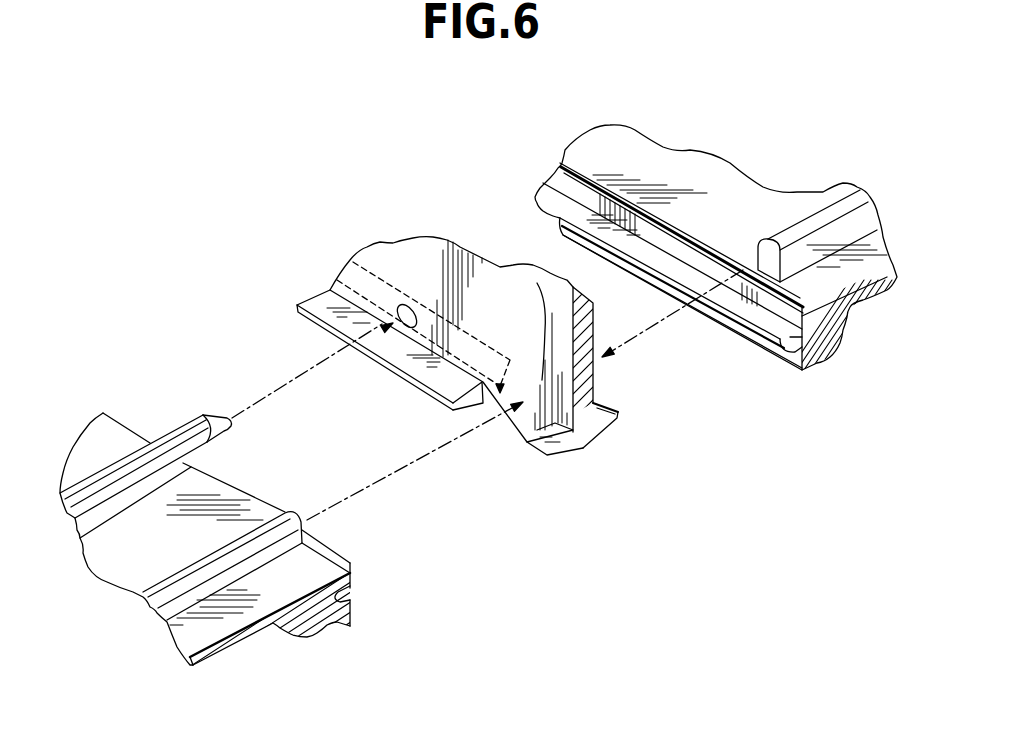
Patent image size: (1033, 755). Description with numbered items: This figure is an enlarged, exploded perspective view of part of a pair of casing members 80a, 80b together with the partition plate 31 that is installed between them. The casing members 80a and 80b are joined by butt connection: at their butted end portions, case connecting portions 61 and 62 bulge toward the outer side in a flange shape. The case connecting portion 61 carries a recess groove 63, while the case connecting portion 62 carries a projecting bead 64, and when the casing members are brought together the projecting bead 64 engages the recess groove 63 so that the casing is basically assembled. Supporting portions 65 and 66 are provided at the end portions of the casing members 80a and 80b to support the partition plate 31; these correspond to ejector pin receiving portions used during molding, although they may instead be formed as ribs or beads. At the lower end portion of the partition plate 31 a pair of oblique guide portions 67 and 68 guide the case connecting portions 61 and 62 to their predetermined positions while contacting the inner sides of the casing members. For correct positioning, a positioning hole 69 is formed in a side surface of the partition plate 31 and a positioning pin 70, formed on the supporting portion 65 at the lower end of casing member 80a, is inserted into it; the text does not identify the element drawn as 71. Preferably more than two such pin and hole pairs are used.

The partition plate 31 is at (612, 387).
The case connecting portion 61 is at (338, 632).
The case connecting portion 62 is at (829, 363).
The recess groove 63 is at (352, 590).
The projecting bead 64 is at (763, 327).
The supporting portion 65 is at (285, 523).
The supporting portion 66 is at (845, 212).
The oblique guide portion 67 is at (420, 383).
The oblique guide portion 68 is at (537, 282).
The positioning hole 69 is at (405, 327).
The positioning pin 70 is at (183, 433).
The groove 71 is at (168, 465).
The casing member 80a is at (257, 660).
The casing member 80b is at (703, 130).